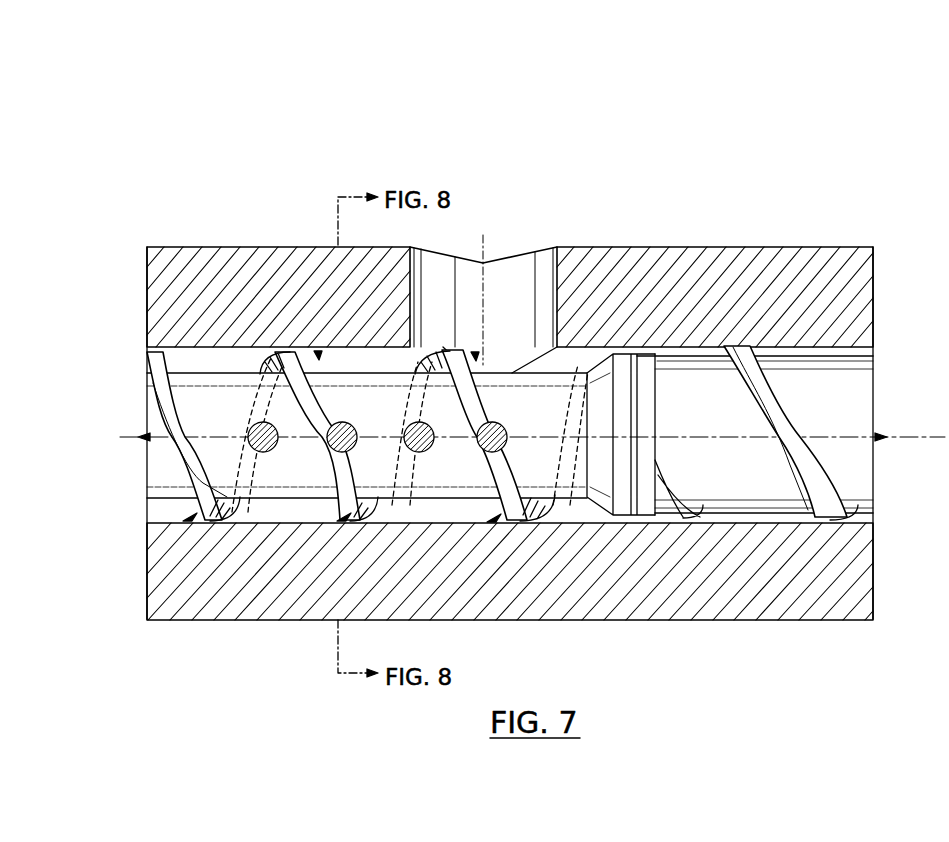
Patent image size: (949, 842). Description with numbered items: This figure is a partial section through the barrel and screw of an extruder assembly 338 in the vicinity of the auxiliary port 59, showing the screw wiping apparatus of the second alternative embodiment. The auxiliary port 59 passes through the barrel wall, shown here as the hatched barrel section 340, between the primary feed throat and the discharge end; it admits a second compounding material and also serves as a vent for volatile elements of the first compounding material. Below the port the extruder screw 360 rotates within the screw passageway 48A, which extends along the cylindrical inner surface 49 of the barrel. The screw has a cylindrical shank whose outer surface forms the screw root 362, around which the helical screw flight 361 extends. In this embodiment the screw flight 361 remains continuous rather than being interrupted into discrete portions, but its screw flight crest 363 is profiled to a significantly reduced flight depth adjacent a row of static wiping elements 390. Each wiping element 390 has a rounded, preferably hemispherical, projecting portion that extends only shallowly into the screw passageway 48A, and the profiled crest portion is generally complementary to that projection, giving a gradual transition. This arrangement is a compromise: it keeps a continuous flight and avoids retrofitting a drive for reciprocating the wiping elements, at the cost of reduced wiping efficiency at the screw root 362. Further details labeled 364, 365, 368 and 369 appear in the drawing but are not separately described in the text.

The extruder assembly 338 is at (499, 160).
The housing 340 is at (690, 267).
The auxiliary port 59 is at (523, 267).
The screw root 362 is at (546, 372).
The screw passageway 48A is at (198, 358).
The cylindrical inner surface 49 is at (218, 345).
The extruder screw 360 is at (860, 380).
The screw flight 361 is at (842, 475).
The screw flight crest 363 is at (508, 485).
The flight end 364 is at (447, 372).
The wiping element 390 is at (527, 403).
The flight tip 365 is at (533, 522).
The collar ring 368 is at (650, 520).
The collar 369 is at (620, 514).